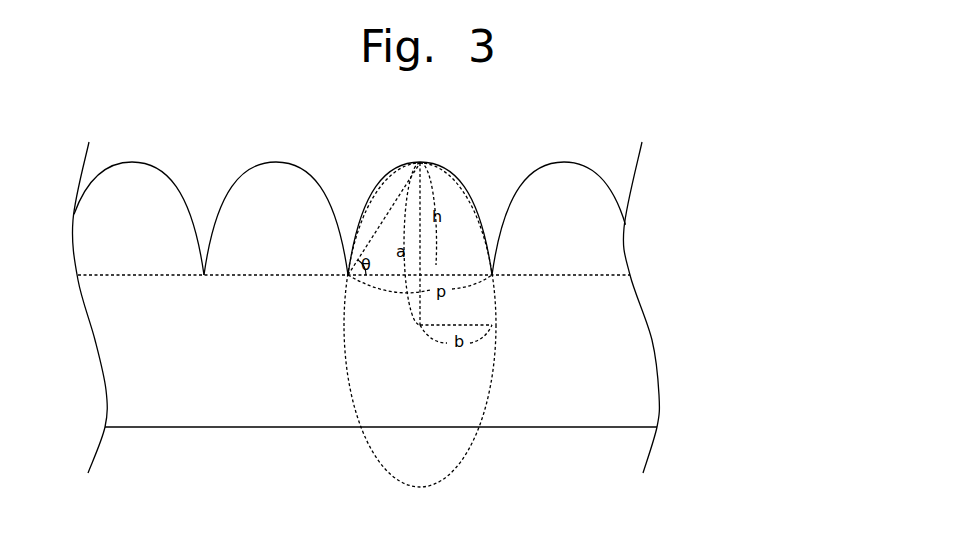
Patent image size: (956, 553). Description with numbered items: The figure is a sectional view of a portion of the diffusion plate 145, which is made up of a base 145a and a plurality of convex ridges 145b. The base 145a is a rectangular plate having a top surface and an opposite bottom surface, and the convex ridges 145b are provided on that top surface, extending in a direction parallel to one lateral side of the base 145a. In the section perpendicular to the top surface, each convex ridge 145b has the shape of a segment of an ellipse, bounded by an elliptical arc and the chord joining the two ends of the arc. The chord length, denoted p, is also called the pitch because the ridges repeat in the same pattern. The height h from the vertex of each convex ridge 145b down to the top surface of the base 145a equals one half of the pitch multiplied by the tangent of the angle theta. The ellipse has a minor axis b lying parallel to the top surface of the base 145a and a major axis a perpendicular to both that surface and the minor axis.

The diffusion plate 145 is at (443, 307).
The base 145a is at (627, 340).
The convex ridges 145b is at (607, 241).